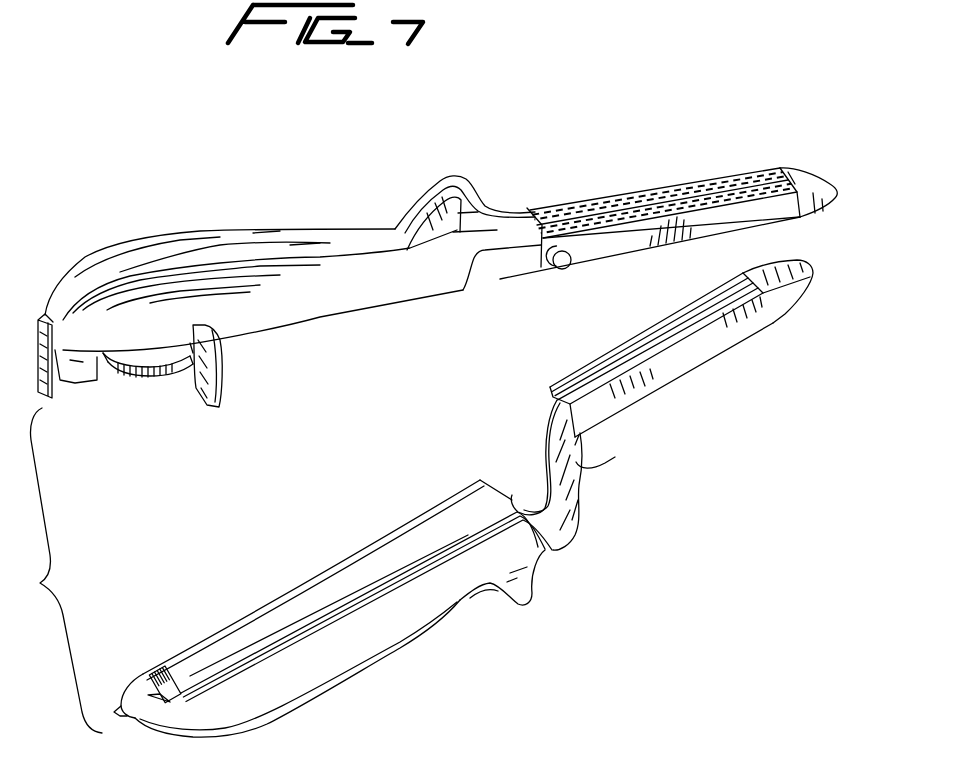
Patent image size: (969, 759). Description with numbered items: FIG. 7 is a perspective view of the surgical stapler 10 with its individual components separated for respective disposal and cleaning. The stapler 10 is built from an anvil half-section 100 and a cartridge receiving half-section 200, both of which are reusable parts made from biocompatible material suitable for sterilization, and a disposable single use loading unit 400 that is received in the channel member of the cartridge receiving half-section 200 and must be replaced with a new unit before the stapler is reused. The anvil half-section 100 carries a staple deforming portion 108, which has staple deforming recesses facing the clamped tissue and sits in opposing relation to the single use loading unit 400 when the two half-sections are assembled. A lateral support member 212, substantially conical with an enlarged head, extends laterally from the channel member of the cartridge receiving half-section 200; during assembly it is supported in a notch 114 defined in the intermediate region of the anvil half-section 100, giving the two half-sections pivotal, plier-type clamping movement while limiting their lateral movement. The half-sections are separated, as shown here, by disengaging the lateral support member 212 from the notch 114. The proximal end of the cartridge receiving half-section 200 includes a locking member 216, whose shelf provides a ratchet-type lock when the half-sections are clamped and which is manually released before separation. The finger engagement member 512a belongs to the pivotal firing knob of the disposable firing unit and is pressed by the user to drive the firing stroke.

The surgical stapler 10 is at (545, 110).
The anvil half-section 100 is at (384, 643).
The staple deforming portion 108 is at (688, 364).
The notch 114 is at (578, 470).
The cartridge receiving half-section 200 is at (362, 242).
The lateral support member 212 is at (552, 266).
The locking member 216 is at (42, 318).
The single use loading unit 400 is at (683, 188).
The finger engagement member 512a is at (208, 406).